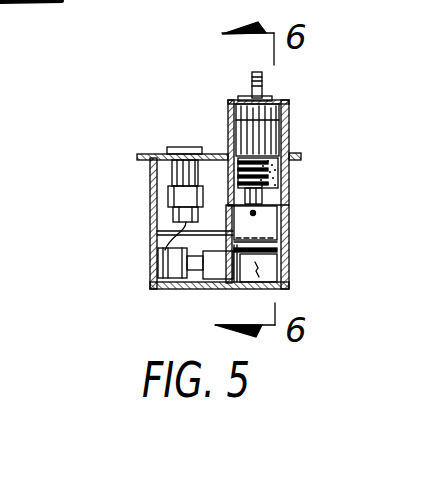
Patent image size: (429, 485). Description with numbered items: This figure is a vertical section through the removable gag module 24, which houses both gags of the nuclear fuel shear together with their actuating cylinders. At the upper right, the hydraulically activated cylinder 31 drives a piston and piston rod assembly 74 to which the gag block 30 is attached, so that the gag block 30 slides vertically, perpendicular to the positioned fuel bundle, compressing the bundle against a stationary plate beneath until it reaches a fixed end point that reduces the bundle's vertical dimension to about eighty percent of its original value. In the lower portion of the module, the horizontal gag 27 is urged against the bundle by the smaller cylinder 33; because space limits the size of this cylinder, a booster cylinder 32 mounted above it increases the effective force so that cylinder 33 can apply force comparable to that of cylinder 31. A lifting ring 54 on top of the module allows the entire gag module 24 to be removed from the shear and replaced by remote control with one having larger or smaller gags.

The gag module 24 is at (428, 104).
The horizontal gag 27 is at (218, 258).
The gag block 30 is at (263, 224).
The hydraulically activated cylinder 31 is at (289, 130).
The booster cylinder 32 is at (185, 147).
The cylinder 33 is at (158, 266).
The lifting ring 54 is at (252, 73).
The piston and piston rod assembly 74 is at (281, 174).